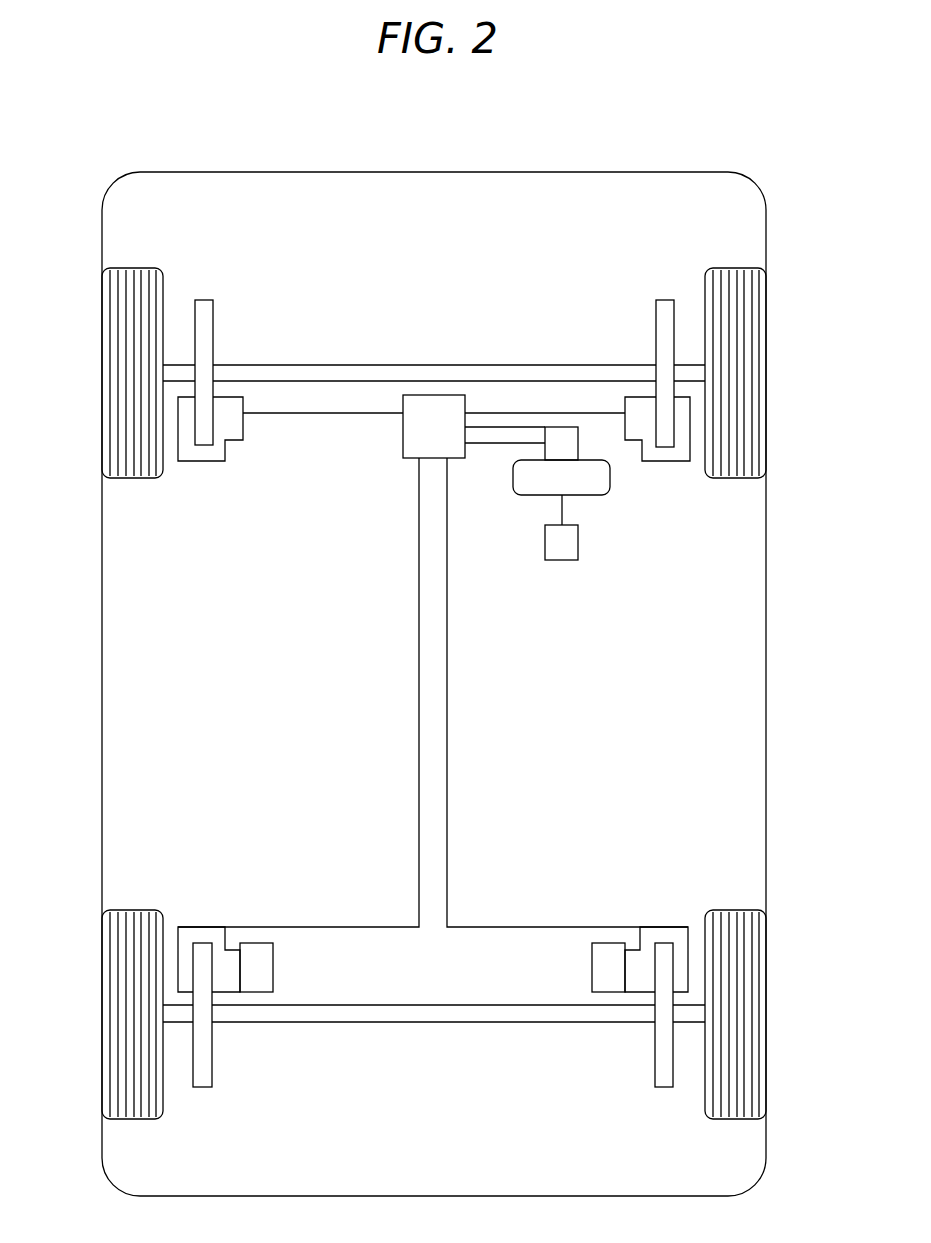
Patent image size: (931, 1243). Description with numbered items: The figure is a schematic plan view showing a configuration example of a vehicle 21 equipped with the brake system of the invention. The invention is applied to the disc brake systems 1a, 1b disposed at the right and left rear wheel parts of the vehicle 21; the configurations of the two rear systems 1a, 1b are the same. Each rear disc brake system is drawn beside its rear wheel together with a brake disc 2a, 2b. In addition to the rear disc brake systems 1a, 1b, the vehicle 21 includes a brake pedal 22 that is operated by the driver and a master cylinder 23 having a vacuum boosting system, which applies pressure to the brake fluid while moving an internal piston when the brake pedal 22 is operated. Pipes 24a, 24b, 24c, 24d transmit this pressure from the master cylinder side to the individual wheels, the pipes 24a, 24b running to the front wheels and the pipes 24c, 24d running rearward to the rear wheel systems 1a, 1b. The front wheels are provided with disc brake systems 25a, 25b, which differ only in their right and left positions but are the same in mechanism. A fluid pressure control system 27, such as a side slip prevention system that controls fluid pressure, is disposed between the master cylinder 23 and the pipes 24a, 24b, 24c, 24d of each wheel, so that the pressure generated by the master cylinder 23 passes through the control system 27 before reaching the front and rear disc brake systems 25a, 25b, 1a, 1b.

The vehicle 21 is at (738, 152).
The brake pedal 22 is at (578, 541).
The master cylinder 23 is at (563, 427).
The pipe 24a is at (319, 412).
The pipe 24b is at (501, 412).
The pipe 24c is at (447, 703).
The pipe 24d is at (419, 709).
The disc brake system 25a is at (227, 452).
The disc brake system 25b is at (667, 461).
The fluid pressure control system 27 is at (402, 439).
The disc brake system 1a is at (202, 927).
The disc brake system 1b is at (665, 927).
The rear left brake disc 2a is at (212, 1063).
The rear right brake disc 2b is at (655, 1058).